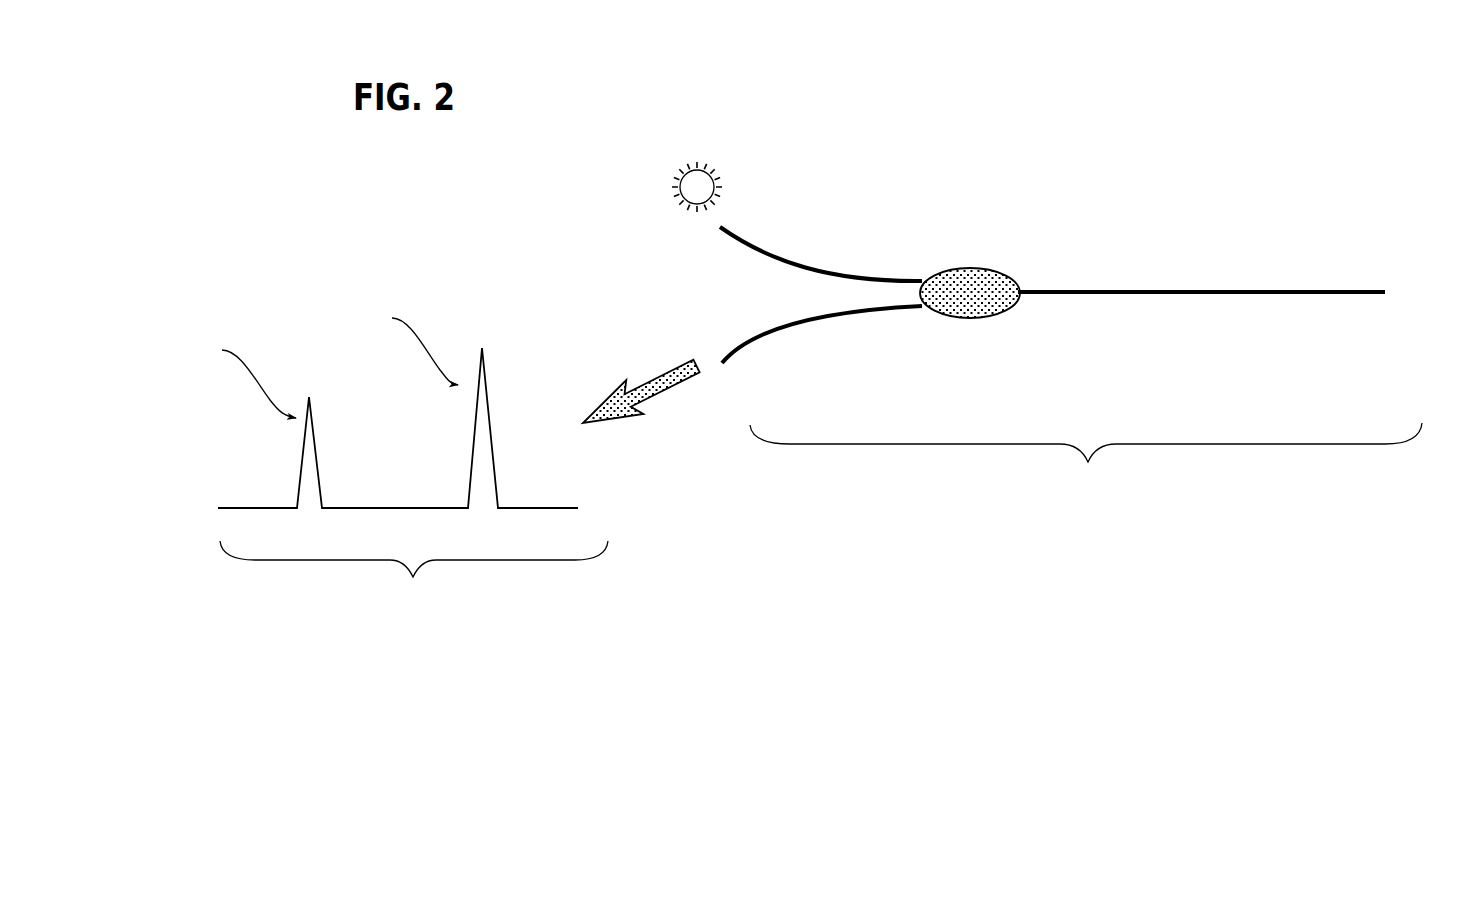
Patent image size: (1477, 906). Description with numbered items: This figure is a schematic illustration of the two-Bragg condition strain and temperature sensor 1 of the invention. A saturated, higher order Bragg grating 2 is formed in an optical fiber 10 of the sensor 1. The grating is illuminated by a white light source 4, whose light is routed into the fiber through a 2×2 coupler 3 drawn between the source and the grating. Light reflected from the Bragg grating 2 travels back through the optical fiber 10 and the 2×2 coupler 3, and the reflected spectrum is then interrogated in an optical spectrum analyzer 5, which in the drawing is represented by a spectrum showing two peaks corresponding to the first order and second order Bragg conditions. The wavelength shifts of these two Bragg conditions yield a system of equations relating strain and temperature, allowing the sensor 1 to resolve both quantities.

The sensor 1 is at (1071, 360).
The higher order Bragg grating 2 is at (1331, 283).
The 2×2 coupler 3 is at (1012, 278).
The white light source 4 is at (718, 178).
The optical spectrum analyzer 5 is at (412, 443).
The optical fiber 10 is at (1170, 293).